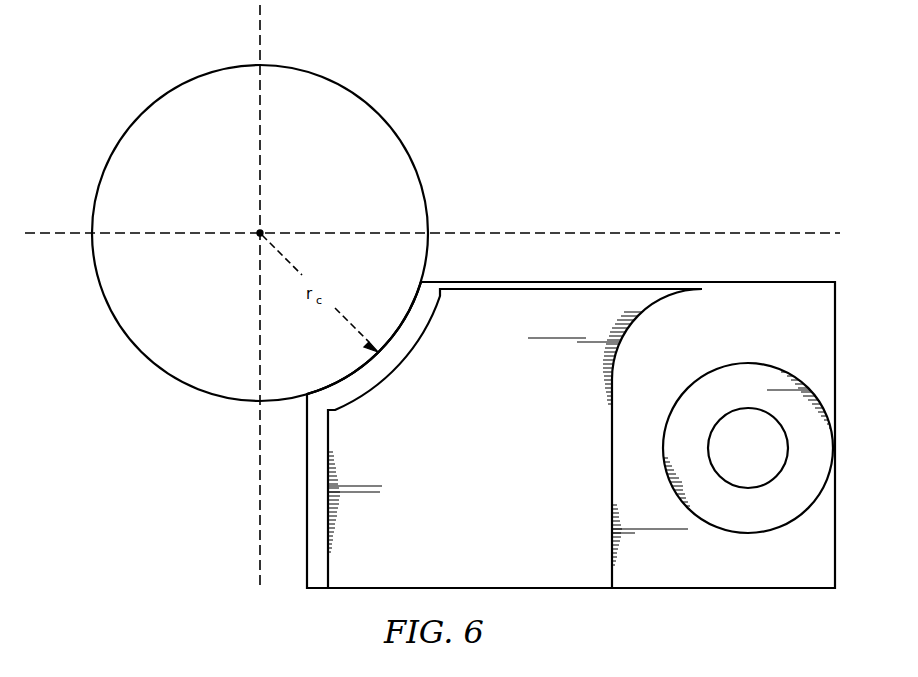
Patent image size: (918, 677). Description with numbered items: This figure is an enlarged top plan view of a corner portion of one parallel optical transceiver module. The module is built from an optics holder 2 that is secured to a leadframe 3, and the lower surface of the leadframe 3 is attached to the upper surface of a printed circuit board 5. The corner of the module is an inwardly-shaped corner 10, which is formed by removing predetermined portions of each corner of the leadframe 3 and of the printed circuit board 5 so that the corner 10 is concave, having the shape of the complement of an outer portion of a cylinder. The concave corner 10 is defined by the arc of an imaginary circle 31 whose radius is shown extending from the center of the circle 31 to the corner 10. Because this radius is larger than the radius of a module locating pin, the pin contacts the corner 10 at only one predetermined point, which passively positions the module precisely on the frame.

The imaginary circle 31 is at (413, 158).
The optics holder 2 is at (657, 308).
The leadframe 3 is at (540, 310).
The printed circuit board 5 is at (480, 282).
The inwardly-shaped corner 10 is at (363, 362).